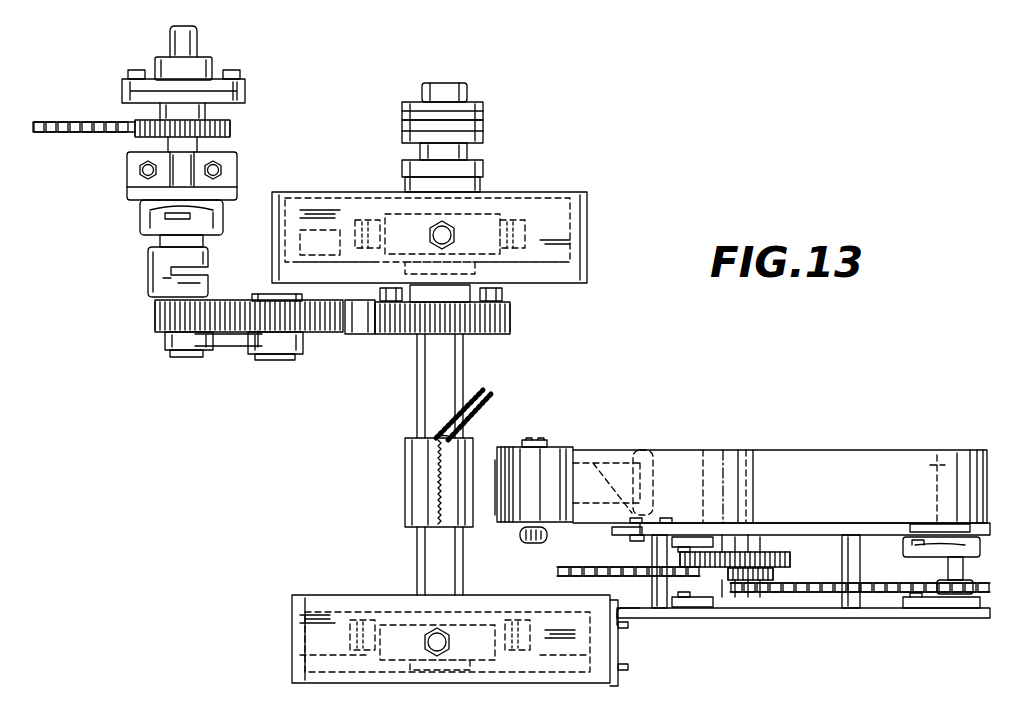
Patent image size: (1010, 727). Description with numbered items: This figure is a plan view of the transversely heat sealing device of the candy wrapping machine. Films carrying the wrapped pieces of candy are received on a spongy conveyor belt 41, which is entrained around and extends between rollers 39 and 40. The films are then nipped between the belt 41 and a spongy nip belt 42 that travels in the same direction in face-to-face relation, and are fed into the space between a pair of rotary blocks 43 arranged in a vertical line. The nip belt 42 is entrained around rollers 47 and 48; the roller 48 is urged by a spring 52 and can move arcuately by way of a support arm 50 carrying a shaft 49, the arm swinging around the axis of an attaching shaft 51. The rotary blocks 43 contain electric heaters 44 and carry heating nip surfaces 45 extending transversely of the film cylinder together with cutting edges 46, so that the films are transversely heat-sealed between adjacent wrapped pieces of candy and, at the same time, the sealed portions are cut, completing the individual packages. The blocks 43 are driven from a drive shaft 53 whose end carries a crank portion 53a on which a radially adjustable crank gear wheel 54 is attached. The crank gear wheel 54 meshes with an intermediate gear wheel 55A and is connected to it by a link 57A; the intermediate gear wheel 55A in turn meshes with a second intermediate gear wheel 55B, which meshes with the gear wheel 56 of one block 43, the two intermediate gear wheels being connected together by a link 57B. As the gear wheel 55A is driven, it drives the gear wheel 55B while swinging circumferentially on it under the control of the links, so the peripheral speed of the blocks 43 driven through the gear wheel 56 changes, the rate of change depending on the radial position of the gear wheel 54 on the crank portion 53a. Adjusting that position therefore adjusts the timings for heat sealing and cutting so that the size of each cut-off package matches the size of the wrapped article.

The roller 39 is at (935, 455).
The roller 40 is at (498, 466).
The spongy conveyor belt 41 is at (843, 458).
The spongy nip belt 42 is at (690, 450).
The rotary blocks 43 is at (408, 490).
The electric heaters 44 is at (435, 437).
The heating nip surfaces 45 is at (425, 450).
The cutting edges 46 is at (433, 505).
The roller 47 is at (737, 463).
The roller 48 is at (525, 459).
The shaft 49 is at (545, 440).
The support arm 50 is at (595, 463).
The attaching shaft 51 is at (647, 450).
The spring 52 is at (525, 542).
The drive shaft 53 is at (198, 128).
The crank portion 53a is at (175, 288).
The crank gear wheel 54 is at (177, 331).
The intermediate gear wheel 55A is at (262, 296).
The second intermediate gear wheel 55B is at (352, 335).
The gear wheel 56 is at (406, 323).
The link 57A is at (232, 343).
The link 57B is at (290, 353).